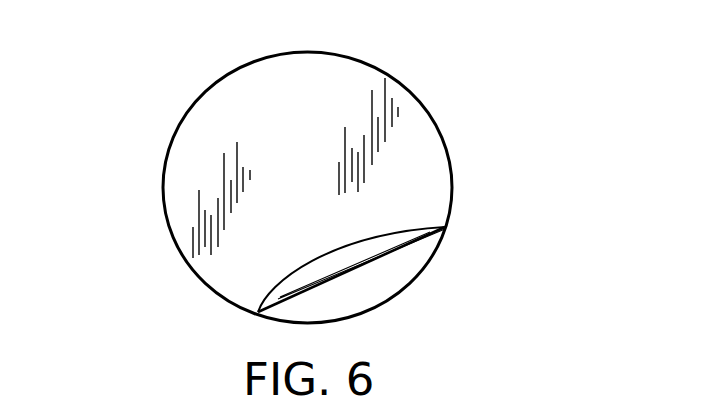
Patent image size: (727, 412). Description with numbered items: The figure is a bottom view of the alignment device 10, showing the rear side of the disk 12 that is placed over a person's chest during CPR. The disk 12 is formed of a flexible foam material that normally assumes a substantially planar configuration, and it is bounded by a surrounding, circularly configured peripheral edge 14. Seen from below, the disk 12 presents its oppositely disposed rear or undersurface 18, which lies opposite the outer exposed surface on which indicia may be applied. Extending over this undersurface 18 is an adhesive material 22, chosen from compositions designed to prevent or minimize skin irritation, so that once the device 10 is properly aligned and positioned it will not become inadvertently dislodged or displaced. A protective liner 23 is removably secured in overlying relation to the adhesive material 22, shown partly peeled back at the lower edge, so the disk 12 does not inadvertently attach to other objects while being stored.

The alignment device 10 is at (388, 64).
The disk 12 is at (452, 167).
The peripheral edge 14 is at (428, 114).
The undersurface 18 is at (403, 258).
The adhesive material 22 is at (381, 285).
The protective liner 23 is at (328, 250).